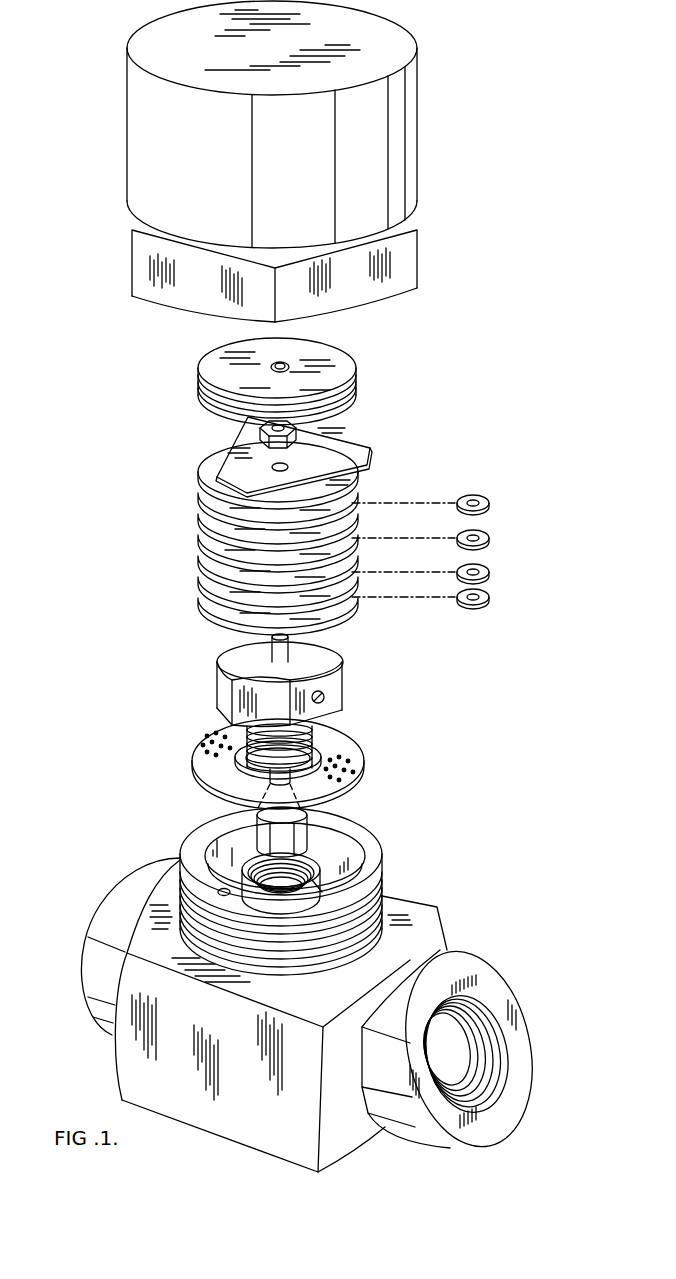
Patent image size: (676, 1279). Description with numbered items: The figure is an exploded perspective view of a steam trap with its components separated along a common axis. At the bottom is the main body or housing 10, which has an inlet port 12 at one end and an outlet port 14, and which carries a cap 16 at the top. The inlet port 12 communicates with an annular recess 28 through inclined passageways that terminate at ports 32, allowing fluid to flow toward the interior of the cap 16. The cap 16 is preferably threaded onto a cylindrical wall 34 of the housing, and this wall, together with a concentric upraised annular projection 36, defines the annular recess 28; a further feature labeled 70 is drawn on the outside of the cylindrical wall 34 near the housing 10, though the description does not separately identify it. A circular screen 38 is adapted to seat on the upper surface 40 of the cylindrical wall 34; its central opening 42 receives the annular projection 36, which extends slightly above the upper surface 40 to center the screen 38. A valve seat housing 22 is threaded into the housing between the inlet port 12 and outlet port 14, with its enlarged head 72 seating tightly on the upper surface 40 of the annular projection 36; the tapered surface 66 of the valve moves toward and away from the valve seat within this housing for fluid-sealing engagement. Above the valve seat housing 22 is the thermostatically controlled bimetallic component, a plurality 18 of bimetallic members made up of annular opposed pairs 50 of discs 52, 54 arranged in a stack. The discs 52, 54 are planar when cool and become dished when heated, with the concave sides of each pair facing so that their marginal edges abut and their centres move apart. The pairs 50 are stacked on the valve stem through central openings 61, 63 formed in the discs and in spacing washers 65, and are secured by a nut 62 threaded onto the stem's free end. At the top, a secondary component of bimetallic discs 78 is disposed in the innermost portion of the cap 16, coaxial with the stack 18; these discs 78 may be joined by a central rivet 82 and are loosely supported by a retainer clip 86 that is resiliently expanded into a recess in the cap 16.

The main body 10 is at (141, 1047).
The inlet port 12 is at (92, 912).
The outlet port 14 is at (483, 1045).
The cap 16 is at (414, 152).
The plurality of bimetallic members 18 is at (269, 545).
The valve seat housing 22 is at (335, 688).
The annular recess 28 is at (236, 850).
The ports 32 is at (245, 880).
The cylindrical wall 34 is at (383, 873).
The upraised annular projection 36 is at (232, 891).
The circular screen 38 is at (324, 763).
The upper surface 40 is at (288, 848).
The central opening 42 is at (317, 757).
The opposed pairs of bimetallic members 50 is at (273, 538).
The bimetallic disc 52 is at (350, 537).
The bimetallic disc 54 is at (350, 565).
The central opening 61 is at (272, 466).
The nut 62 is at (300, 430).
The central opening 63 is at (474, 495).
The spacing washers 65 is at (452, 525).
The tapered surface 66 is at (307, 813).
The external thread of neck 70 is at (382, 895).
The enlarged head 72 is at (319, 709).
The secondary component of bimetallic discs 78 is at (314, 374).
The central rivet 82 is at (288, 364).
The retainer clip 86 is at (299, 457).